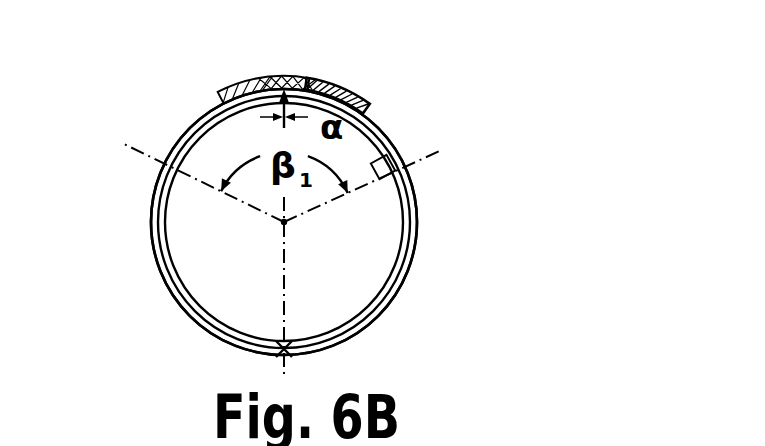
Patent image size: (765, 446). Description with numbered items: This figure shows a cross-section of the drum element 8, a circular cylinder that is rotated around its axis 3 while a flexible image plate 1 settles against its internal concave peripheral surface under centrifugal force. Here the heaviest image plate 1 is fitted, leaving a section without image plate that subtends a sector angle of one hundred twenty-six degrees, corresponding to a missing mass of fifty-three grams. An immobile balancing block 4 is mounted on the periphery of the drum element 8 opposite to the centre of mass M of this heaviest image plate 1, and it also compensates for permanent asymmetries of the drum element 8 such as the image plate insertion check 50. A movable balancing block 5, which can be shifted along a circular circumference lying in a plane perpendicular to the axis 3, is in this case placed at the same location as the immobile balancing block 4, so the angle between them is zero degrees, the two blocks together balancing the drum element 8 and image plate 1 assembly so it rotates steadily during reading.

The image plate 1 is at (407, 240).
The axis 3 is at (284, 222).
The immobile balancing block 4 is at (308, 79).
The movable balancing block 5 is at (352, 95).
The drum element 8 is at (143, 223).
The image plate insertion check 50 is at (393, 157).
The centre of mass M is at (298, 352).